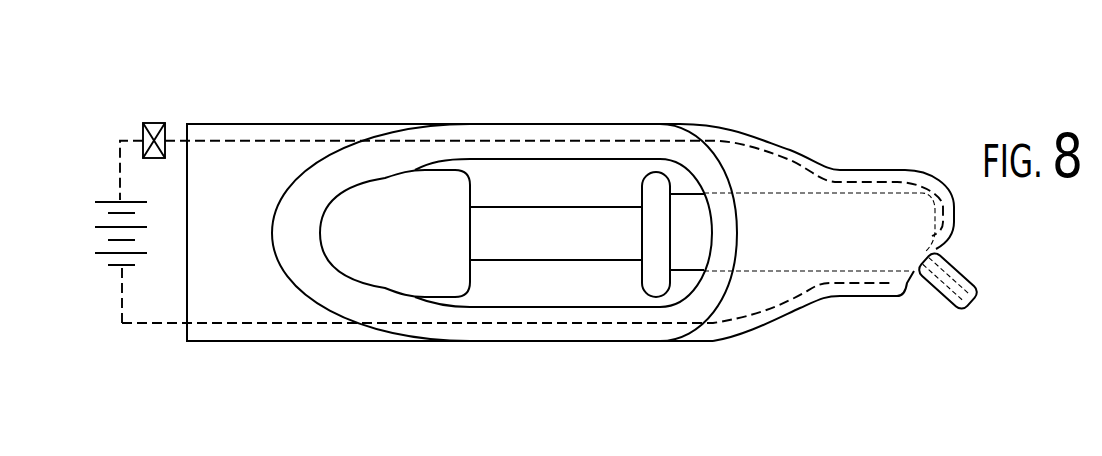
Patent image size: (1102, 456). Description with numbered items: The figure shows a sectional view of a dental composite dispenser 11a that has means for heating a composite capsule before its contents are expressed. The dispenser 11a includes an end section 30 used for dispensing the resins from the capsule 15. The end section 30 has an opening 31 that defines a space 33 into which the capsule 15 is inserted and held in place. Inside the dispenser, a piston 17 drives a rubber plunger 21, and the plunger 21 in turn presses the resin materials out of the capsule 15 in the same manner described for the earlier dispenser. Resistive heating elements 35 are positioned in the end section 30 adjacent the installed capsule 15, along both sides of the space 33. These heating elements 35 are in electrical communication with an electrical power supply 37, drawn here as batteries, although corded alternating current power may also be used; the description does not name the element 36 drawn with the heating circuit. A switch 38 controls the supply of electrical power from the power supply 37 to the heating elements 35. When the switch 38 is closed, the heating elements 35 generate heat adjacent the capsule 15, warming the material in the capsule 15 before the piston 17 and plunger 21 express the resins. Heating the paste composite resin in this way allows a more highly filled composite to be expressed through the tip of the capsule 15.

The dental composite dispenser 11a is at (760, 92).
The capsule 15 is at (685, 222).
The piston 17 is at (385, 289).
The rubber plunger 21 is at (523, 269).
The end section 30 is at (341, 118).
The opening 31 is at (452, 137).
The space 33 is at (560, 180).
The resistive heating elements 35 is at (778, 157).
The conductive coating 36 is at (252, 138).
The electrical power supply 37 is at (84, 235).
The switch 38 is at (152, 122).